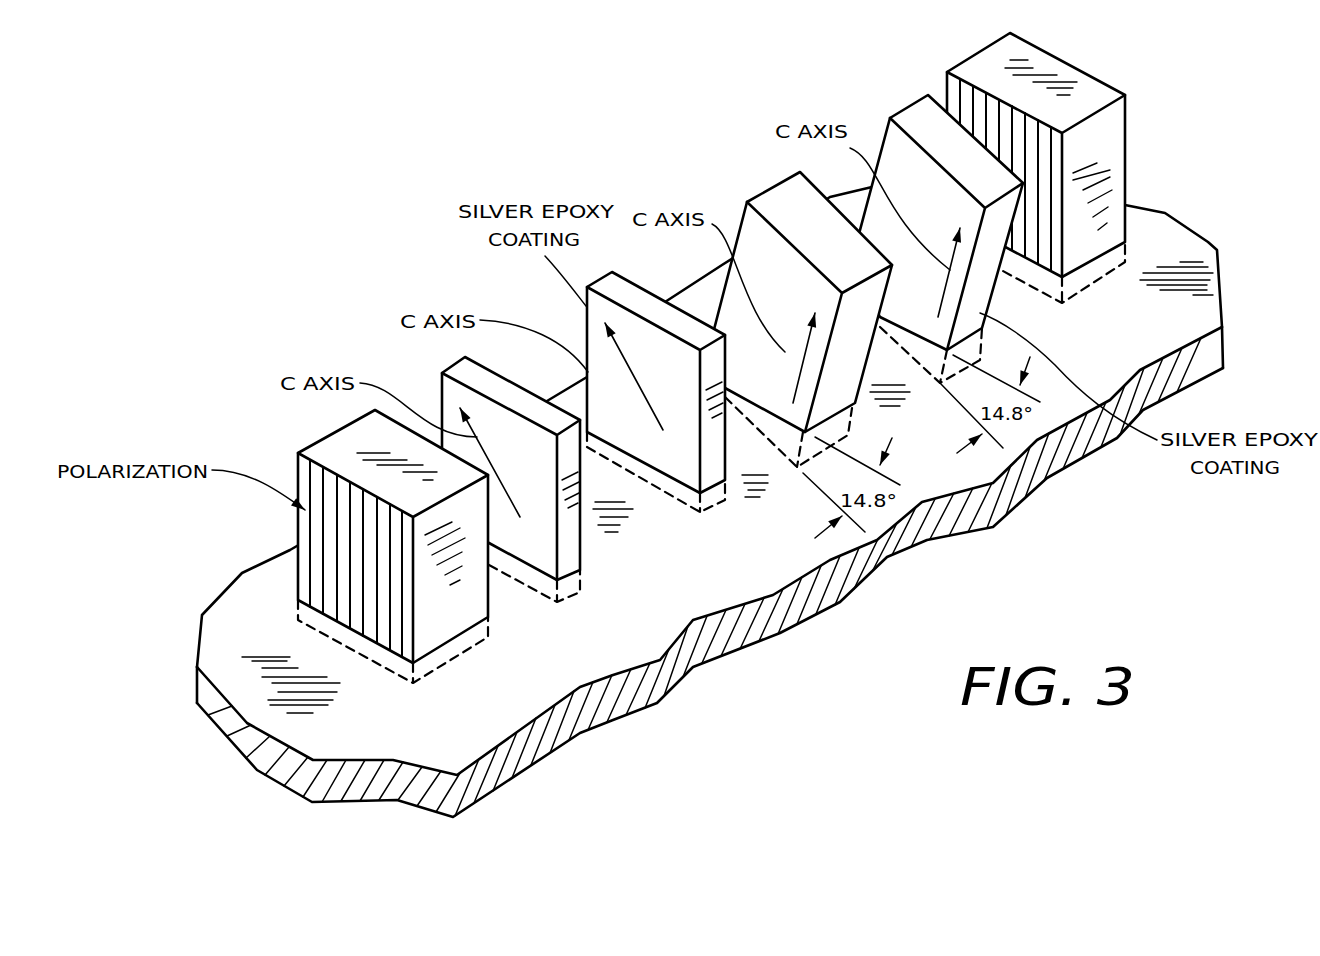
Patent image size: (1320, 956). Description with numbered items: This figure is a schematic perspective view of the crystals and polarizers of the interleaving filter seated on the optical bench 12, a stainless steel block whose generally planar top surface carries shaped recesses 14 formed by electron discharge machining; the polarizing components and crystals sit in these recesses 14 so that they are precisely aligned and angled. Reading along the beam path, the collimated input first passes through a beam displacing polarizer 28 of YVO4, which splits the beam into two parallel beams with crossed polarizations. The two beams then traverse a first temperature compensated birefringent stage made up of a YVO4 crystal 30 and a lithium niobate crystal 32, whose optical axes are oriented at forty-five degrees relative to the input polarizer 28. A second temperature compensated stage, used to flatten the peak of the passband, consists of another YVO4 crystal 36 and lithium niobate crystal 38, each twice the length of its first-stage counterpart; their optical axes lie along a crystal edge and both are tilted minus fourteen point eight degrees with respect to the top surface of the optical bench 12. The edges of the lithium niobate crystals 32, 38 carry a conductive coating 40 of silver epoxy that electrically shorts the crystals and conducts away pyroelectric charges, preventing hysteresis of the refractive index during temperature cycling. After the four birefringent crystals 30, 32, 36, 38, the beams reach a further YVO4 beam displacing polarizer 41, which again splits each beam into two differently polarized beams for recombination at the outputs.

The optical bench 12 is at (606, 708).
The shaped recesses 14 is at (387, 668).
The beam displacing polarizer 28 is at (308, 443).
The YVO4 crystal 30 is at (440, 370).
The lithium niobate crystal 32 is at (676, 468).
The YVO4 crystal 36 is at (772, 187).
The lithium niobate crystal 38 is at (910, 108).
The conductive coating 40 is at (583, 340).
The beam displacing polarizer 41 is at (982, 52).